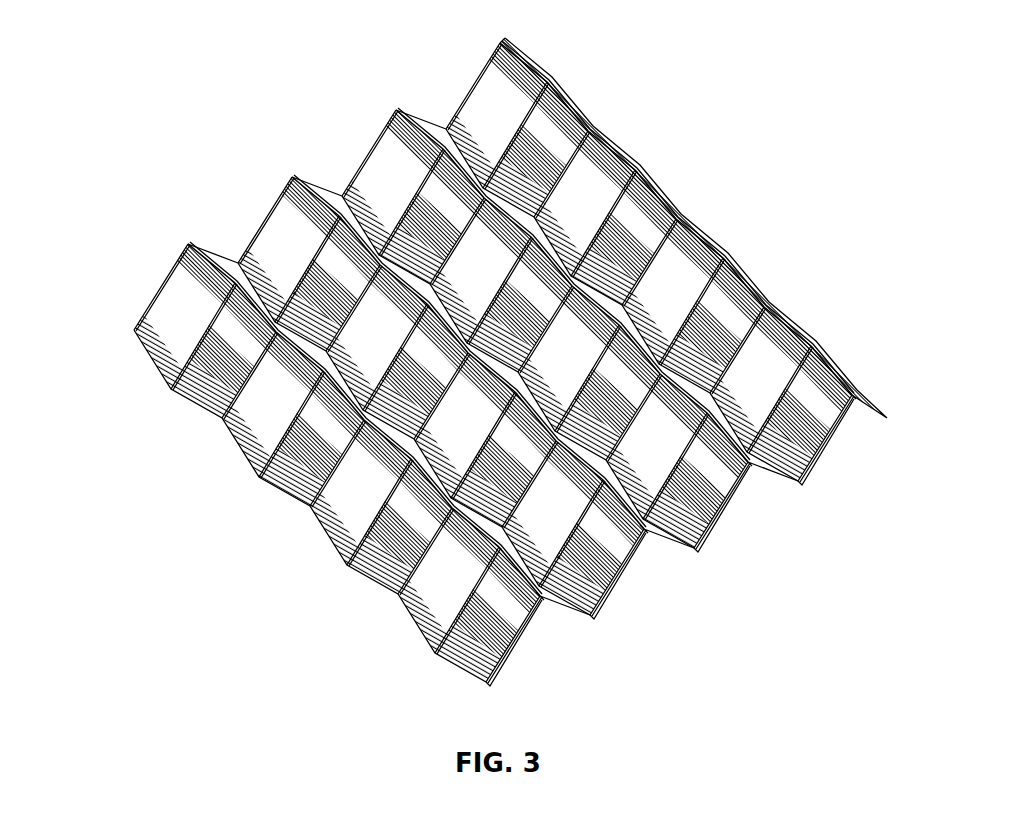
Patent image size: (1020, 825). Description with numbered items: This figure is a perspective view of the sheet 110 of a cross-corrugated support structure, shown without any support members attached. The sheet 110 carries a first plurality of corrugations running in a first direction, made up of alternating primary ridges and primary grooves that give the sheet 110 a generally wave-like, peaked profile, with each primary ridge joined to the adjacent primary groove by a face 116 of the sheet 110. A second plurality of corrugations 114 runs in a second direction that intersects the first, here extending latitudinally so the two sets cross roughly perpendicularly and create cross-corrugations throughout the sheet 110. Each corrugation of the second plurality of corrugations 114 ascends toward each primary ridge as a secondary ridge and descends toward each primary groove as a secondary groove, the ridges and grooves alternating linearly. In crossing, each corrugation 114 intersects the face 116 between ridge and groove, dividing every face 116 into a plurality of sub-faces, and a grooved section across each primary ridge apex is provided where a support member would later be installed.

The sheet 110 is at (460, 366).
The second plurality of corrugations 114 is at (431, 655).
The face 116 is at (370, 128).